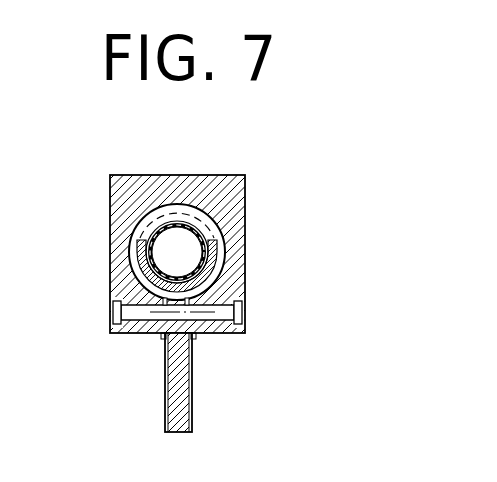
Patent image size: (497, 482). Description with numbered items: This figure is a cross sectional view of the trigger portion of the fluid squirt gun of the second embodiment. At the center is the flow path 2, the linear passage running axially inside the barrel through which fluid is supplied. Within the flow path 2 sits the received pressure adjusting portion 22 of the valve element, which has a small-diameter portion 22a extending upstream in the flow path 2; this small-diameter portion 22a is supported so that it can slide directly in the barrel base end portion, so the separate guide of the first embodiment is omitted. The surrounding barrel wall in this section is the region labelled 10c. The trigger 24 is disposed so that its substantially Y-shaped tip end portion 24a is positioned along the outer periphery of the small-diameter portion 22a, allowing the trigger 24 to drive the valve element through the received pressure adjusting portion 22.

The housing block 10c is at (135, 234).
The flow path 2 is at (178, 240).
The received pressure adjusting portion 22 is at (201, 230).
The small-diameter portion 22a is at (160, 224).
The trigger 24 is at (183, 388).
The tip end portion 24a is at (216, 256).